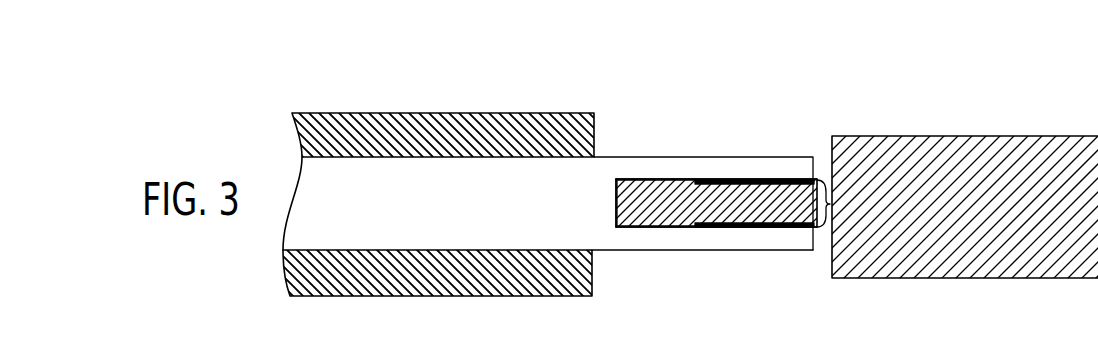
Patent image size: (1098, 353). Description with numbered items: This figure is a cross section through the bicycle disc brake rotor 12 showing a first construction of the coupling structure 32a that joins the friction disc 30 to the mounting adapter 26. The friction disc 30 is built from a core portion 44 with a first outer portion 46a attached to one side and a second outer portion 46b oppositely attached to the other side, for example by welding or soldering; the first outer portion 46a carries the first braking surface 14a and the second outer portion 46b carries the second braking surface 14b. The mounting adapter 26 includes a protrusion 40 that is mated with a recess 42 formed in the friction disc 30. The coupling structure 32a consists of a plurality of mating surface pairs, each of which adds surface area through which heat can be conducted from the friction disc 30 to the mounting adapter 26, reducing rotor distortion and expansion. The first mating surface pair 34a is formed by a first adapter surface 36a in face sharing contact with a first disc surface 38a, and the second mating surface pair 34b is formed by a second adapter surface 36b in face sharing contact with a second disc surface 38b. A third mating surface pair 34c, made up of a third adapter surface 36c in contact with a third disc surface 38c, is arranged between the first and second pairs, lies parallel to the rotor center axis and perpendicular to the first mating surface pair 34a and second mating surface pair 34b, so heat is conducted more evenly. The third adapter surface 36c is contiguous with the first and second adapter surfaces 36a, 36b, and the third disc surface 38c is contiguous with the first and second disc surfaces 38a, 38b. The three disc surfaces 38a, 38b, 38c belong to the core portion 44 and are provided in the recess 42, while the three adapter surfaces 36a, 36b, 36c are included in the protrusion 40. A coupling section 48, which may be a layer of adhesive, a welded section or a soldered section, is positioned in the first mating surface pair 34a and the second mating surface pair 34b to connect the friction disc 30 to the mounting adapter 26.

The bicycle disc brake rotor 12 is at (667, 184).
The first braking surface 14a is at (436, 122).
The second braking surface 14b is at (435, 283).
The mounting adapter 26 is at (995, 213).
The friction disc 30 is at (546, 207).
The coupling structure 32a is at (706, 178).
The first mating surface pair 34a is at (658, 170).
The second mating surface pair 34b is at (656, 238).
The third mating surface pair 34c is at (606, 223).
The first adapter surface 36a is at (645, 179).
The second adapter surface 36b is at (645, 228).
The third adapter surface 36c is at (616, 213).
The first disc surface 38a is at (650, 181).
The second disc surface 38b is at (652, 226).
The third disc surface 38c is at (620, 212).
The protrusion 40 is at (706, 203).
The recess 42 is at (833, 203).
The core portion 44 is at (442, 215).
The first outer portion 46a is at (437, 143).
The second outer portion 46b is at (435, 280).
The coupling section 48 is at (788, 180).